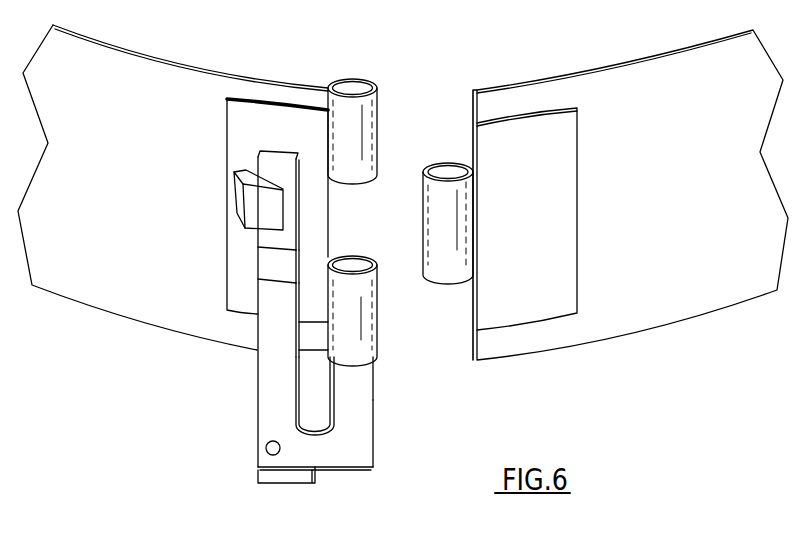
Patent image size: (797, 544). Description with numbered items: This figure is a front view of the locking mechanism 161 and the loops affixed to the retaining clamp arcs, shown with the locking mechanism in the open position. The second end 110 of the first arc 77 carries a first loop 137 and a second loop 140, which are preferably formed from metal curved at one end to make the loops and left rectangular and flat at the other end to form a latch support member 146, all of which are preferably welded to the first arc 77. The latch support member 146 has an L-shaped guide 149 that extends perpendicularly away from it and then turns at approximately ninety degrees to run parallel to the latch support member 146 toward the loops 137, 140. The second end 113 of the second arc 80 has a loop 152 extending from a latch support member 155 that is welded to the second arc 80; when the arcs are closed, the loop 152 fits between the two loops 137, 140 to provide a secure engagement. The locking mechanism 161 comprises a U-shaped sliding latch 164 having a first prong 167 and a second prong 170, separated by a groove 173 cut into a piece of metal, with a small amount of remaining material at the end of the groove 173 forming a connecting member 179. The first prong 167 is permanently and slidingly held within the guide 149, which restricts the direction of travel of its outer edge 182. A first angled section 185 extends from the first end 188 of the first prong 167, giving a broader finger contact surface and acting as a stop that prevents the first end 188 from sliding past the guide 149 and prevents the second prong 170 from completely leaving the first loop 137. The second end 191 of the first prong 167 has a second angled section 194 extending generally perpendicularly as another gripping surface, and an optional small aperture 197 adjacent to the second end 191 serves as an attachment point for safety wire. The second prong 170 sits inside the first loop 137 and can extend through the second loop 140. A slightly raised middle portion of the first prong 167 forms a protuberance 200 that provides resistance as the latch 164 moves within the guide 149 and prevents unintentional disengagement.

The first arc 77 is at (95, 53).
The second arc 80 is at (652, 72).
The second end of the first arc 110 is at (318, 76).
The second end of the second arc 113 is at (503, 77).
The first loop 137 is at (367, 117).
The second loop 140 is at (359, 327).
The loop 152 is at (453, 220).
The latch support member 155 is at (567, 265).
The first angled section 185 is at (272, 150).
The first end of the first prong 188 is at (253, 139).
The L-shaped guide 149 is at (240, 173).
The latch support member 146 is at (236, 228).
The sliding latch 164 is at (253, 253).
The protuberance 200 is at (266, 267).
The locking mechanism 161 is at (256, 296).
The first prong 167 is at (277, 306).
The second prong 170 is at (357, 360).
The outer edge of the first prong 182 is at (254, 404).
The groove 173 is at (309, 395).
The connecting member 179 is at (324, 452).
The second end of the first prong 191 is at (247, 471).
The second angled section 194 is at (290, 485).
The aperture 197 is at (266, 448).